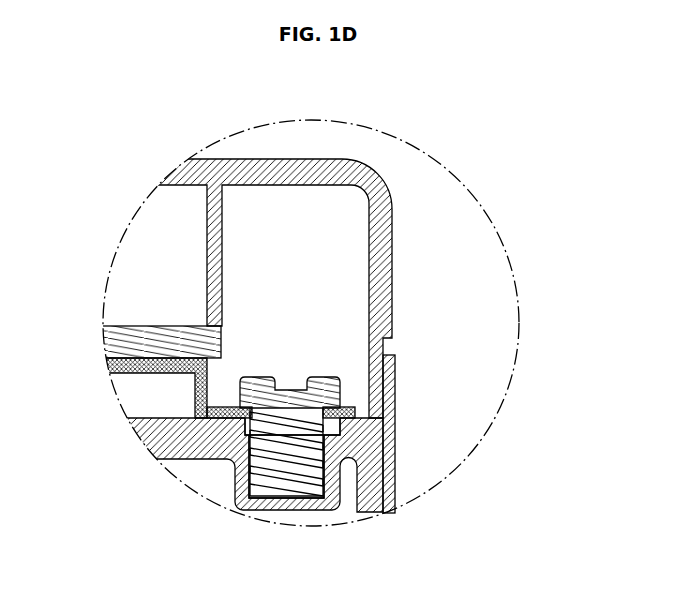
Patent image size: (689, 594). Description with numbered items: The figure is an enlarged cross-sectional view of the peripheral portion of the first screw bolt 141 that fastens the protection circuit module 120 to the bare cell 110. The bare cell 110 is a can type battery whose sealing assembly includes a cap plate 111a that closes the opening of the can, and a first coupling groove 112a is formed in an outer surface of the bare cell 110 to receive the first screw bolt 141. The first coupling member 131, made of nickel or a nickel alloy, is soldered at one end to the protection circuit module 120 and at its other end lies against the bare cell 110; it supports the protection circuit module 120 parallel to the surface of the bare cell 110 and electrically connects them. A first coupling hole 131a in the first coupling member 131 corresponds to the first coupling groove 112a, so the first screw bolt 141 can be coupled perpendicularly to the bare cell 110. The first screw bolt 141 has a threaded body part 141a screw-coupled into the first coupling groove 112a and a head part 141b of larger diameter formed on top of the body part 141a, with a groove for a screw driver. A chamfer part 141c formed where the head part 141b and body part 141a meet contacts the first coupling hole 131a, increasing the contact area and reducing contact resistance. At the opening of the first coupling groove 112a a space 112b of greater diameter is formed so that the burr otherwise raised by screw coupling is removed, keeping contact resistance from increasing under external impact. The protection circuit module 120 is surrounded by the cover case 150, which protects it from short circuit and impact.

The bare cell 110 is at (304, 495).
The cap plate 111a is at (143, 432).
The first coupling groove 112a is at (298, 506).
The space 112b is at (243, 470).
The protection circuit module 120 is at (126, 325).
The first coupling member 131 is at (195, 389).
The first coupling hole 131a is at (243, 418).
The first screw bolt 141 is at (414, 393).
The body part 141a is at (395, 425).
The head part 141b is at (342, 389).
The chamfer part 141c is at (389, 494).
The cover case 150 is at (247, 162).